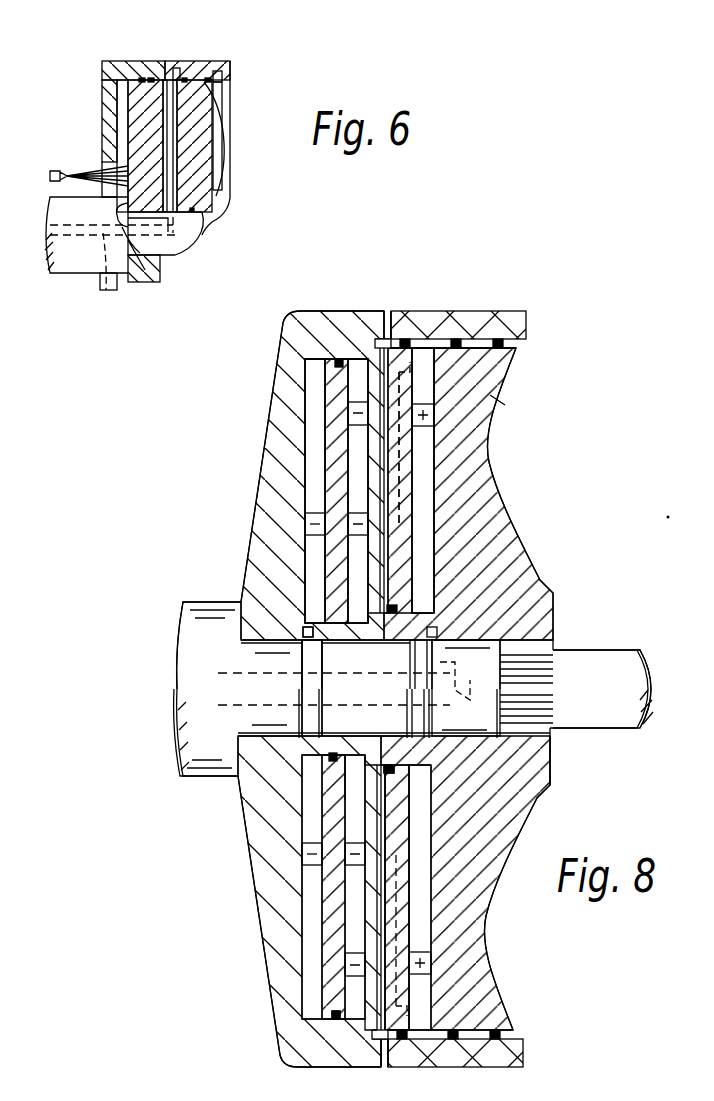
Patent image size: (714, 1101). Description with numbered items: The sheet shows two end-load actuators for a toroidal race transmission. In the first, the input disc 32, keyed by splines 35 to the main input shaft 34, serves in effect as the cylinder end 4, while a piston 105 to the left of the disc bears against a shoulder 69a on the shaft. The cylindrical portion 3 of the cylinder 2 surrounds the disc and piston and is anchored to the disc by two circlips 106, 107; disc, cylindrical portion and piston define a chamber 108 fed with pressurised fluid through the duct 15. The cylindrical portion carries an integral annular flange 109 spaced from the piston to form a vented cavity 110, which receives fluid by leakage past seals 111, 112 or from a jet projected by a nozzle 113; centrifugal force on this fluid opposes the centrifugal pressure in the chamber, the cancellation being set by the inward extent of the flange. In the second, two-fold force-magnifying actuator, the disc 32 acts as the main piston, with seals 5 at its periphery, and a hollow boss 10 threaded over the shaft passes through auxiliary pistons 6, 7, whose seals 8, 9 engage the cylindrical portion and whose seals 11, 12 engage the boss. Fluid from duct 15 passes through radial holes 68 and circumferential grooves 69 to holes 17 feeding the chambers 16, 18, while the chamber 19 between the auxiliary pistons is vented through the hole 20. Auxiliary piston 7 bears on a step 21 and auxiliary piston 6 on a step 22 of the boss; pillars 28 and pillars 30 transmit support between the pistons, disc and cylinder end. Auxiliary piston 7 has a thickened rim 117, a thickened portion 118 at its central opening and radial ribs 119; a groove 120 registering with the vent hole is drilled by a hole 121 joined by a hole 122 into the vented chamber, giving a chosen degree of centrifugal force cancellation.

In FIG. 6, the cylinder 2 is at (223, 45).
In FIG. 8, the cylinder 2 is at (254, 347).
In FIG. 6, the cylindrical portion 3 is at (224, 60).
In FIG. 8, the cylindrical portion 3 is at (515, 311).
In FIG. 8, the cylinder-end portion 4 is at (265, 418).
In FIG. 8, the seals 5 is at (497, 339).
In FIG. 8, the auxiliary piston 6 is at (332, 925).
In FIG. 8, the auxiliary piston 7 is at (403, 920).
In FIG. 8, the seal 8 is at (330, 1007).
In FIG. 8, the seal 9 is at (406, 339).
In FIG. 8, the cylindrical boss 10 is at (349, 790).
In FIG. 8, the seal 11 is at (332, 770).
In FIG. 8, the seal 12 is at (397, 775).
In FIG. 6, the central drilling 15 is at (107, 290).
In FIG. 8, the chamber 16 is at (318, 413).
In FIG. 8, the branch-drilling 17 is at (302, 635).
In FIG. 8, the chamber 18 is at (427, 380).
In FIG. 8, the chamber 19 is at (358, 359).
In FIG. 8, the hole 20 is at (387, 322).
In FIG. 8, the step 21 is at (362, 1028).
In FIG. 8, the step 22 is at (303, 628).
In FIG. 8, the pillars 28 is at (427, 422).
In FIG. 8, the pillars 30 is at (318, 515).
In FIG. 6, the input disc 32 is at (203, 103).
In FIG. 8, the input disc 32 is at (497, 400).
In FIG. 6, the main input shaft 34 is at (72, 265).
In FIG. 8, the main input shaft 34 is at (627, 670).
In FIG. 8, the splines 35 is at (553, 632).
In FIG. 8, the radial holes 68 is at (302, 655).
In FIG. 8, the circumferential grooves 69 is at (302, 740).
In FIG. 6, the shoulder 69a is at (138, 258).
In FIG. 6, the piston 105 is at (147, 157).
In FIG. 6, the circlip 106 is at (177, 68).
In FIG. 6, the circlip 107 is at (222, 78).
In FIG. 6, the chamber 108 is at (167, 143).
In FIG. 6, the annular flange 109 is at (107, 90).
In FIG. 6, the vented cavity 110 is at (123, 118).
In FIG. 6, the seal 111 is at (150, 78).
In FIG. 6, the seal 112 is at (140, 78).
In FIG. 6, the nozzle 113 is at (60, 168).
In FIG. 8, the thickened rim 117 is at (503, 347).
In FIG. 8, the thickened rim 118 is at (400, 582).
In FIG. 8, the thickened portion 119 is at (413, 478).
In FIG. 8, the groove 120 is at (390, 339).
In FIG. 8, the hole 121 is at (352, 447).
In FIG. 8, the hole 122 is at (332, 548).